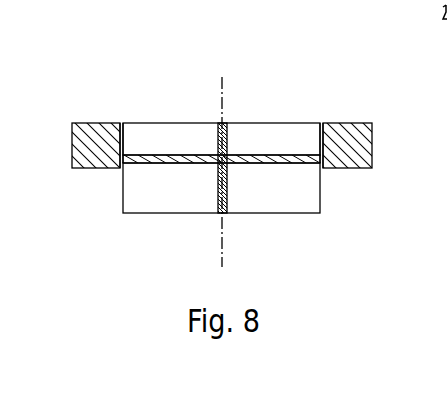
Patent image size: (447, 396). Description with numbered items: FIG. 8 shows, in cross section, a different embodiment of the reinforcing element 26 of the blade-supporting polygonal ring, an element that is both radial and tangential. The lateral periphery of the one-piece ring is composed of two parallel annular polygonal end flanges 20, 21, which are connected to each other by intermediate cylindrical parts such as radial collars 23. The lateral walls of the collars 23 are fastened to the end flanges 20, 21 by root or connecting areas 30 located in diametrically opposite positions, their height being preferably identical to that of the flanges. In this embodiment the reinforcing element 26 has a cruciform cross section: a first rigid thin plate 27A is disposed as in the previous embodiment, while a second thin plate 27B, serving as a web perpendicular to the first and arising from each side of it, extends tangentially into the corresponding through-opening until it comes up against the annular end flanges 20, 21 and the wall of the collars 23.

The annular polygonal end flange 20 is at (354, 138).
The annular polygonal end flange 21 is at (72, 130).
The radial collar 23 is at (307, 189).
The reinforcing element 26 is at (201, 142).
The first rigid thin plate 27A is at (228, 186).
The second thin plate 27B is at (167, 160).
The connecting area 30 is at (130, 133).